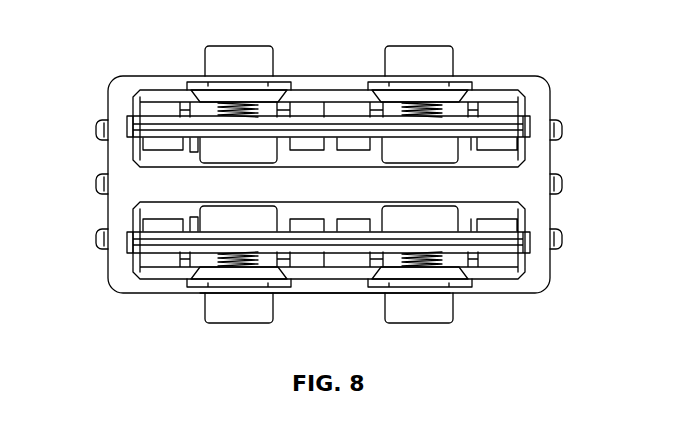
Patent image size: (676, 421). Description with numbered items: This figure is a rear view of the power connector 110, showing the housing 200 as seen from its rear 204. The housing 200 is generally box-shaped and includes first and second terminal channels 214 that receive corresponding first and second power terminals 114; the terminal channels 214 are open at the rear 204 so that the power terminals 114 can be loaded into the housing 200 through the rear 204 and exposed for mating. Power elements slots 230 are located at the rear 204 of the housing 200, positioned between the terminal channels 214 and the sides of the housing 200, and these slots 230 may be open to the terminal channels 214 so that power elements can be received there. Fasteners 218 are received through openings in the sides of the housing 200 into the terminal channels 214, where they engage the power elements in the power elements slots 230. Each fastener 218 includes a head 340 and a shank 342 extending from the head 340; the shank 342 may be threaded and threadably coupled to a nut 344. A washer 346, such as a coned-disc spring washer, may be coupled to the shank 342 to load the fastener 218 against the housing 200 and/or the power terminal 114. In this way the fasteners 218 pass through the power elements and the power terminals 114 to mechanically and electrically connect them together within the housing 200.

The power connector 110 is at (336, 184).
The housing 200 is at (116, 196).
The rear 204 is at (328, 293).
The terminal channels 214 is at (522, 150).
The fasteners 218 is at (418, 46).
The power elements slots 230 is at (503, 97).
The power terminals 114 is at (525, 112).
The head 340 is at (446, 305).
The shank 342 is at (398, 256).
The nut 344 is at (438, 221).
The washer 346 is at (467, 278).